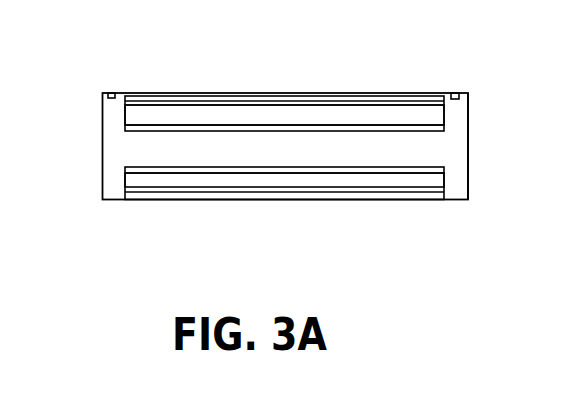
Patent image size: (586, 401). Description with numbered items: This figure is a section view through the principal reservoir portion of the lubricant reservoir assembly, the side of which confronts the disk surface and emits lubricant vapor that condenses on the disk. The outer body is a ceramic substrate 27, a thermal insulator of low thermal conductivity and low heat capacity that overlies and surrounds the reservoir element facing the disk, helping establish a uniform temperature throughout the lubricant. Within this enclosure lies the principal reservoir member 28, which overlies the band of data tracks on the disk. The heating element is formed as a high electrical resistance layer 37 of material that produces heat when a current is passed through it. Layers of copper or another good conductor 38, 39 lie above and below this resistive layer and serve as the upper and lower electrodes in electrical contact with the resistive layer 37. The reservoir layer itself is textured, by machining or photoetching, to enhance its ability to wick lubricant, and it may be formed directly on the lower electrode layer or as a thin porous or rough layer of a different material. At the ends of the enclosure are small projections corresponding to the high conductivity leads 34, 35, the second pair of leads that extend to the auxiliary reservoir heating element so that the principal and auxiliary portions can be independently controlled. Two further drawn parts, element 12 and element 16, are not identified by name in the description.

The housing frame 12 is at (140, 192).
The elongated panel body 16 is at (281, 150).
The ceramic substrate 27 is at (470, 105).
The principal reservoir member 28 is at (138, 93).
The high conductivity lead 34 is at (113, 93).
The high conductivity lead 35 is at (455, 92).
The high electrical resistance layer 37 is at (199, 115).
The conductor layer 38 is at (162, 96).
The conductor layer 39 is at (237, 123).